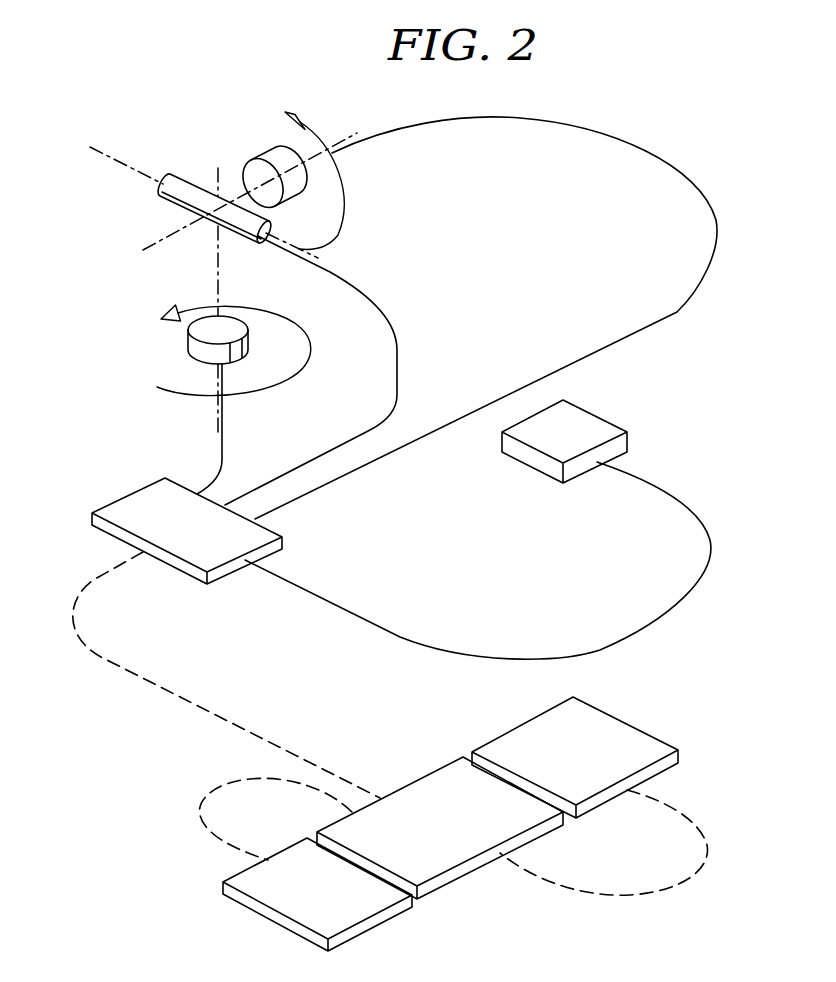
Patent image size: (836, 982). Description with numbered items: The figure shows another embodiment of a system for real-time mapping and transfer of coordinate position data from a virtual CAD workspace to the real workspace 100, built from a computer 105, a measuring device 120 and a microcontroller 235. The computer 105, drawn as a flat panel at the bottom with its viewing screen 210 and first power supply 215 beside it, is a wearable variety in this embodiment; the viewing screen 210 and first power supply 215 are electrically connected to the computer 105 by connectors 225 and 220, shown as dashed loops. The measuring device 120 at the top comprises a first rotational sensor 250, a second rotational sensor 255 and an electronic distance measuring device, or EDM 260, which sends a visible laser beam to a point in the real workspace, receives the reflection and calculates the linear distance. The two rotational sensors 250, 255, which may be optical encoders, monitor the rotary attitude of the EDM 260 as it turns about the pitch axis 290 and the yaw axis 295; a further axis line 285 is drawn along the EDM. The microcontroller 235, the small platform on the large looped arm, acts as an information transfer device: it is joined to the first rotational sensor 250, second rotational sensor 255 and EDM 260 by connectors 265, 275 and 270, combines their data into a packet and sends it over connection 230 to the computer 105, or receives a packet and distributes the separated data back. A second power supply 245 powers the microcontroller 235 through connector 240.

The real workspace 100 is at (632, 97).
The computer 105 is at (433, 780).
The measuring device 120 is at (90, 79).
The viewing screen 210 is at (612, 728).
The first power supply 215 is at (283, 927).
The connector 220 is at (203, 815).
The connector 225 is at (707, 845).
The connection 230 is at (107, 657).
The microcontroller 235 is at (120, 510).
The connector 240 is at (710, 577).
The second power supply 245 is at (592, 423).
The first rotational sensor 250 is at (190, 342).
The second rotational sensor 255 is at (260, 157).
The electronic distance measuring device (EDM) 260 is at (196, 180).
The connector 265 is at (227, 422).
The connector 270 is at (367, 292).
The connector 275 is at (720, 233).
The barrel axis 285 is at (107, 153).
The pitch axis 290 is at (160, 240).
The yaw axis 295 is at (218, 405).